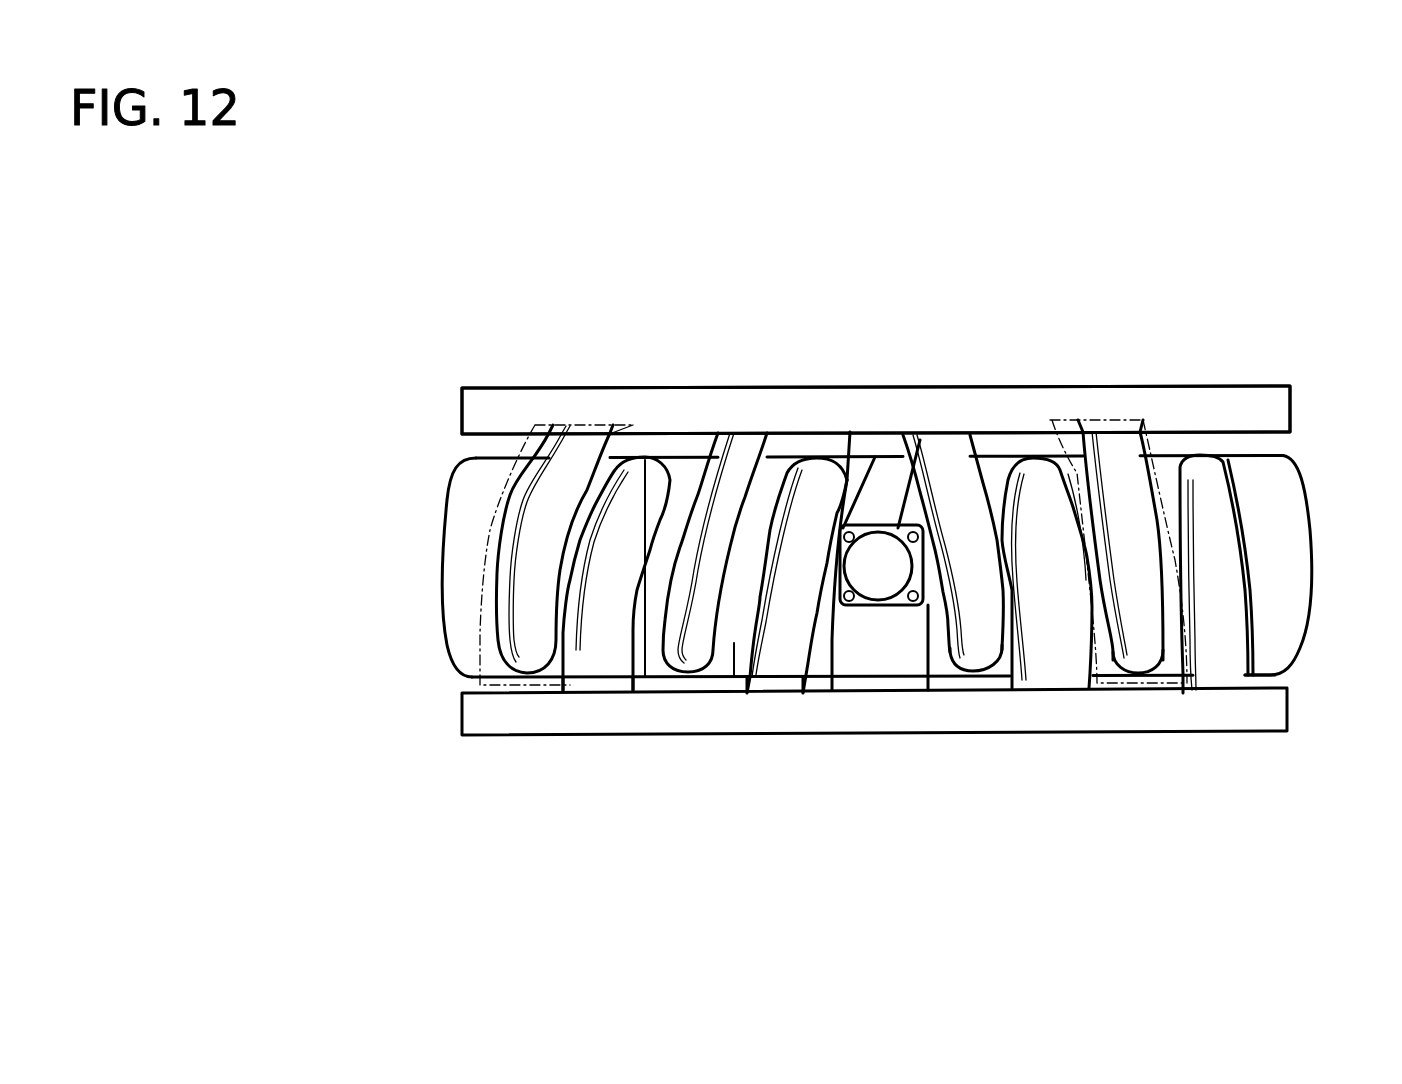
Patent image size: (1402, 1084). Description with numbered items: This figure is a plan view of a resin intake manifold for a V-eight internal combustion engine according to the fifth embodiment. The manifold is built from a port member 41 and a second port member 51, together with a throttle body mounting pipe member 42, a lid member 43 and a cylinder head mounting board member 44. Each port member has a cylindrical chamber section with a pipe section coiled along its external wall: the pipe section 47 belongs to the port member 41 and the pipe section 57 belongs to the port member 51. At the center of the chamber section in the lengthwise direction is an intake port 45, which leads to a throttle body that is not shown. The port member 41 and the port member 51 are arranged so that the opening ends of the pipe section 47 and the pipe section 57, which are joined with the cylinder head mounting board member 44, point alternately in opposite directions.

The port member 41 is at (592, 373).
The throttle body mounting pipe member 42 is at (905, 657).
The lid member 43 is at (453, 576).
The cylinder head mounting board member 44 is at (468, 400).
The intake port 45 is at (878, 560).
The pipe section 47 is at (738, 452).
The port member 51 is at (1087, 376).
The pipe section 57 is at (598, 682).